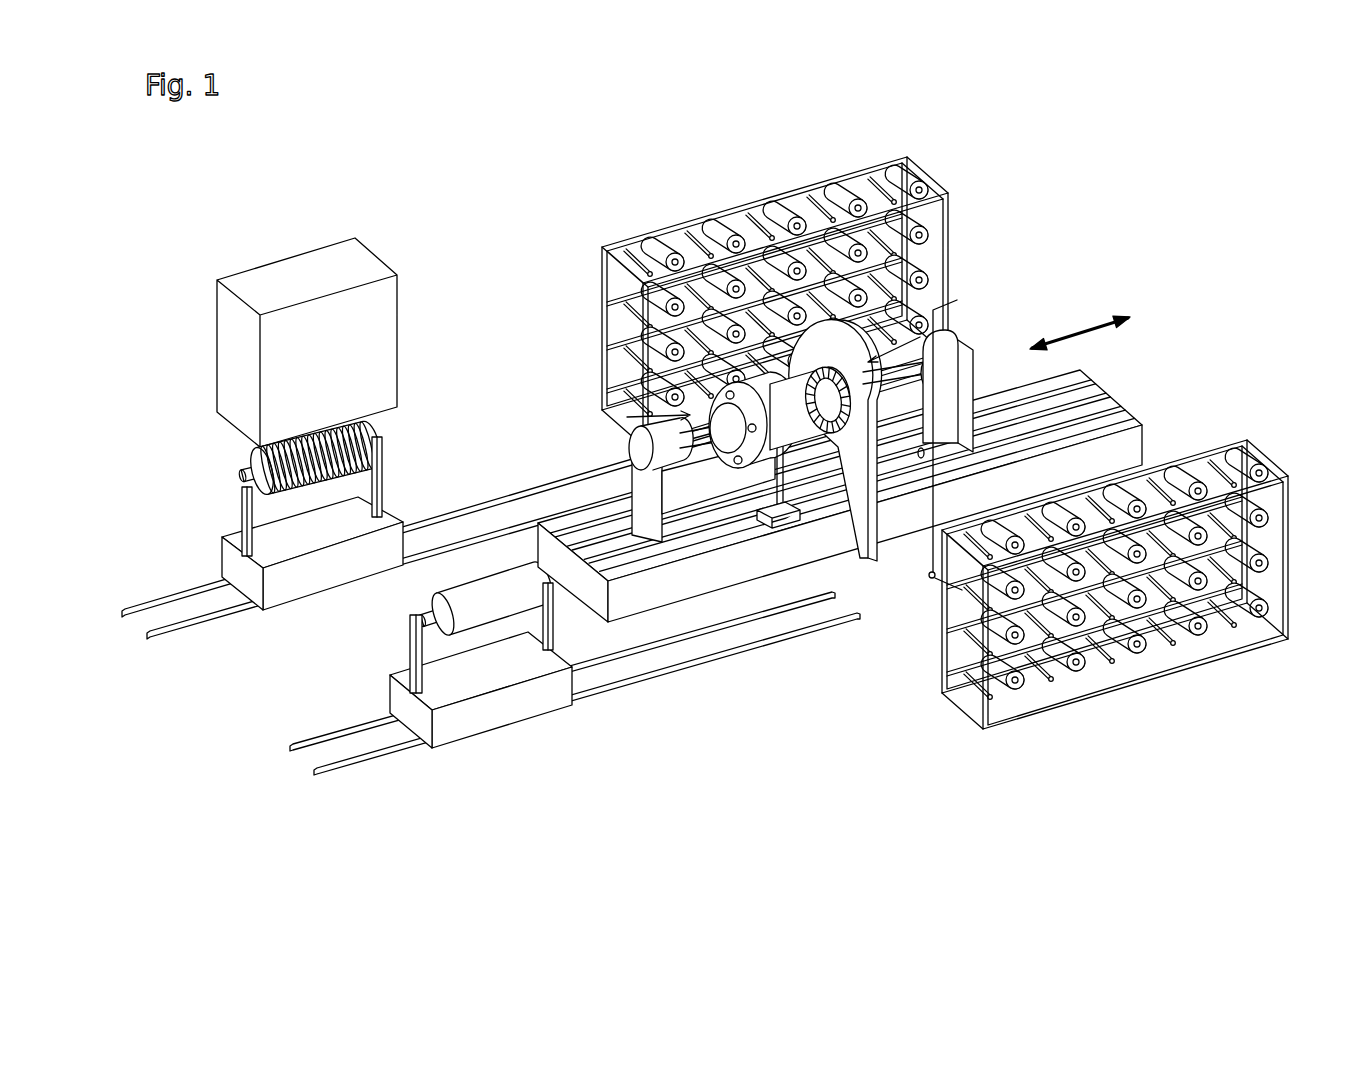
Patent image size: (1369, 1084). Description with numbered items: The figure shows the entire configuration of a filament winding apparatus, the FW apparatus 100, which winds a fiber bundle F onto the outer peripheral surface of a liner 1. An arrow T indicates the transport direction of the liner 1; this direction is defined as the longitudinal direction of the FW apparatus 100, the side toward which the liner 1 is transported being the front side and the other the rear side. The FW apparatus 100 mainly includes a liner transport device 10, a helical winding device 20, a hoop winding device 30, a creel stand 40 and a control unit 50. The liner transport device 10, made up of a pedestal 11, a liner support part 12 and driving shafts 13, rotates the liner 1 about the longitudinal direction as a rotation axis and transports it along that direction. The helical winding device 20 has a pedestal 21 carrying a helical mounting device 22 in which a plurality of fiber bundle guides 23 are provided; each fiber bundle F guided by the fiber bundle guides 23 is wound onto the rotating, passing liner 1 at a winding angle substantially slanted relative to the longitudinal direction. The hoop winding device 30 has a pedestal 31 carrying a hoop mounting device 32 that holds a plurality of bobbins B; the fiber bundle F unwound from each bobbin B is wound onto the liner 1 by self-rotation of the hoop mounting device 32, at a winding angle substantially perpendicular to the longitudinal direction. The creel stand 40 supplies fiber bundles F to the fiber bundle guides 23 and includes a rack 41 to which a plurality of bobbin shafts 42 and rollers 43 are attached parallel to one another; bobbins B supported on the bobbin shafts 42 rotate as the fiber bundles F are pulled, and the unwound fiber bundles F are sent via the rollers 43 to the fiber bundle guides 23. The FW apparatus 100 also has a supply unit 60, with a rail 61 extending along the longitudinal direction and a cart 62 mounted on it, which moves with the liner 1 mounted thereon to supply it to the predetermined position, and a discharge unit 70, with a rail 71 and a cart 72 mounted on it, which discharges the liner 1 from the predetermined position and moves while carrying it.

The liner 1 is at (231, 486).
The liner transport device 10 is at (840, 429).
The pedestal 11 is at (829, 481).
The liner support part 12 is at (963, 338).
The driving shafts 13 is at (962, 388).
The helical winding device 20 is at (880, 423).
The pedestal 21 is at (856, 528).
The helical mounting device 22 is at (852, 414).
The fiber bundle guides 23 is at (872, 425).
The hoop winding device 30 is at (616, 424).
The pedestal 31 is at (790, 521).
The hoop mounting device 32 is at (766, 458).
The creel stand 40 is at (915, 454).
The rack 41 is at (600, 320).
The bobbin shafts 42 is at (954, 447).
The rollers 43 is at (858, 200).
The control unit 50 is at (286, 229).
The supply unit 60 is at (575, 695).
The rail 61 is at (668, 680).
The cart 62 is at (385, 702).
The discharge unit 70 is at (485, 534).
The rail 71 is at (466, 500).
The cart 72 is at (218, 558).
The FW apparatus 100 is at (1137, 193).
The bobbins B is at (762, 192).
The fiber bundle F is at (926, 510).
The arrow T is at (1080, 326).